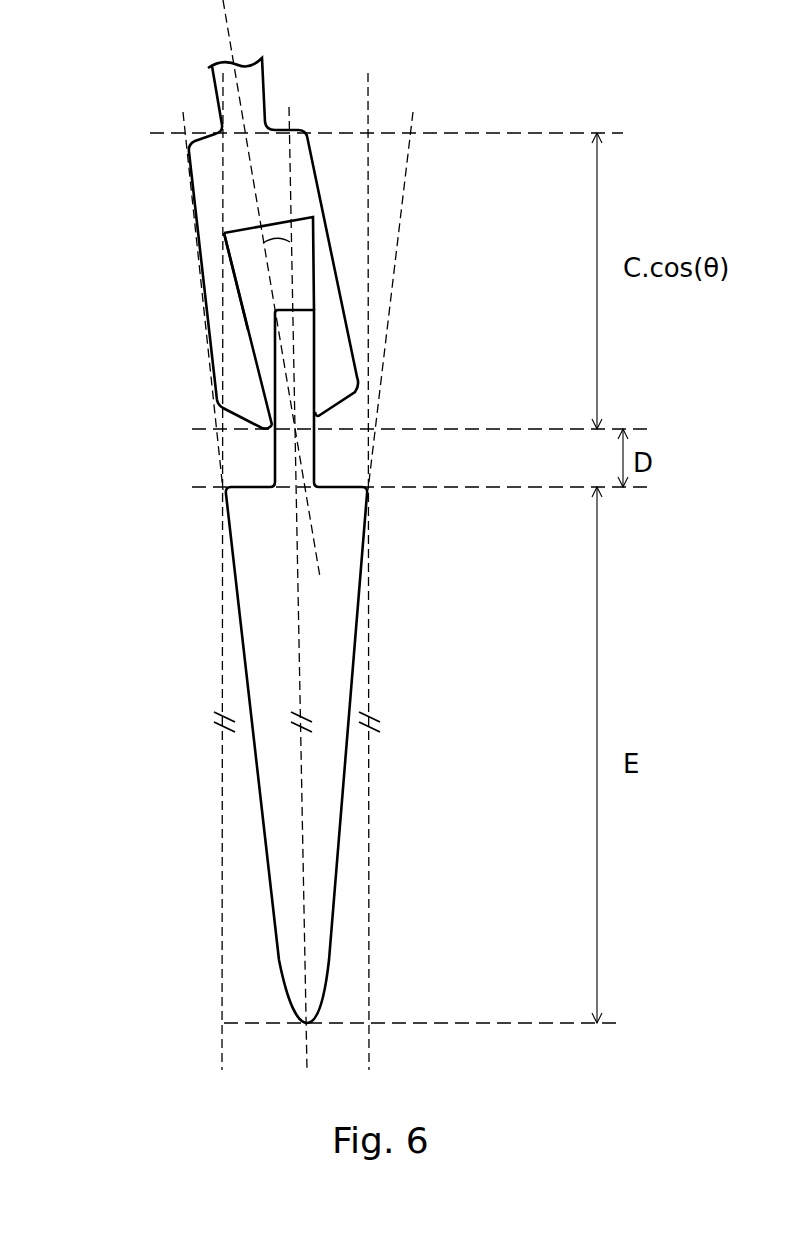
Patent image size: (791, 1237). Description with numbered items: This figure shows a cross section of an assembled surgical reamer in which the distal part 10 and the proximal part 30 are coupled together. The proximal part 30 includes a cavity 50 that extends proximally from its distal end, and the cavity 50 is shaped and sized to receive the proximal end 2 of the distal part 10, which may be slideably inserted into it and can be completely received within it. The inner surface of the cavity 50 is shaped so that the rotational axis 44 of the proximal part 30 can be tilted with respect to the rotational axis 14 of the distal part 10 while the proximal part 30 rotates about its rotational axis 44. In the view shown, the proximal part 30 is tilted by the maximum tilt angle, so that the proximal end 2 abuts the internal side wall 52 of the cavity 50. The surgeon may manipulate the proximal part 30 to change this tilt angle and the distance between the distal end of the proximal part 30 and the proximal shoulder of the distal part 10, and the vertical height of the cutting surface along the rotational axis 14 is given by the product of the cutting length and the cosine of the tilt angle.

The proximal end 2 is at (316, 365).
The distal part 10 is at (186, 594).
The rotational axis 14 is at (303, 172).
The proximal part 30 is at (152, 192).
The rotational axis 44 is at (232, 98).
The cavity 50 is at (237, 289).
The internal side wall 52 is at (326, 265).